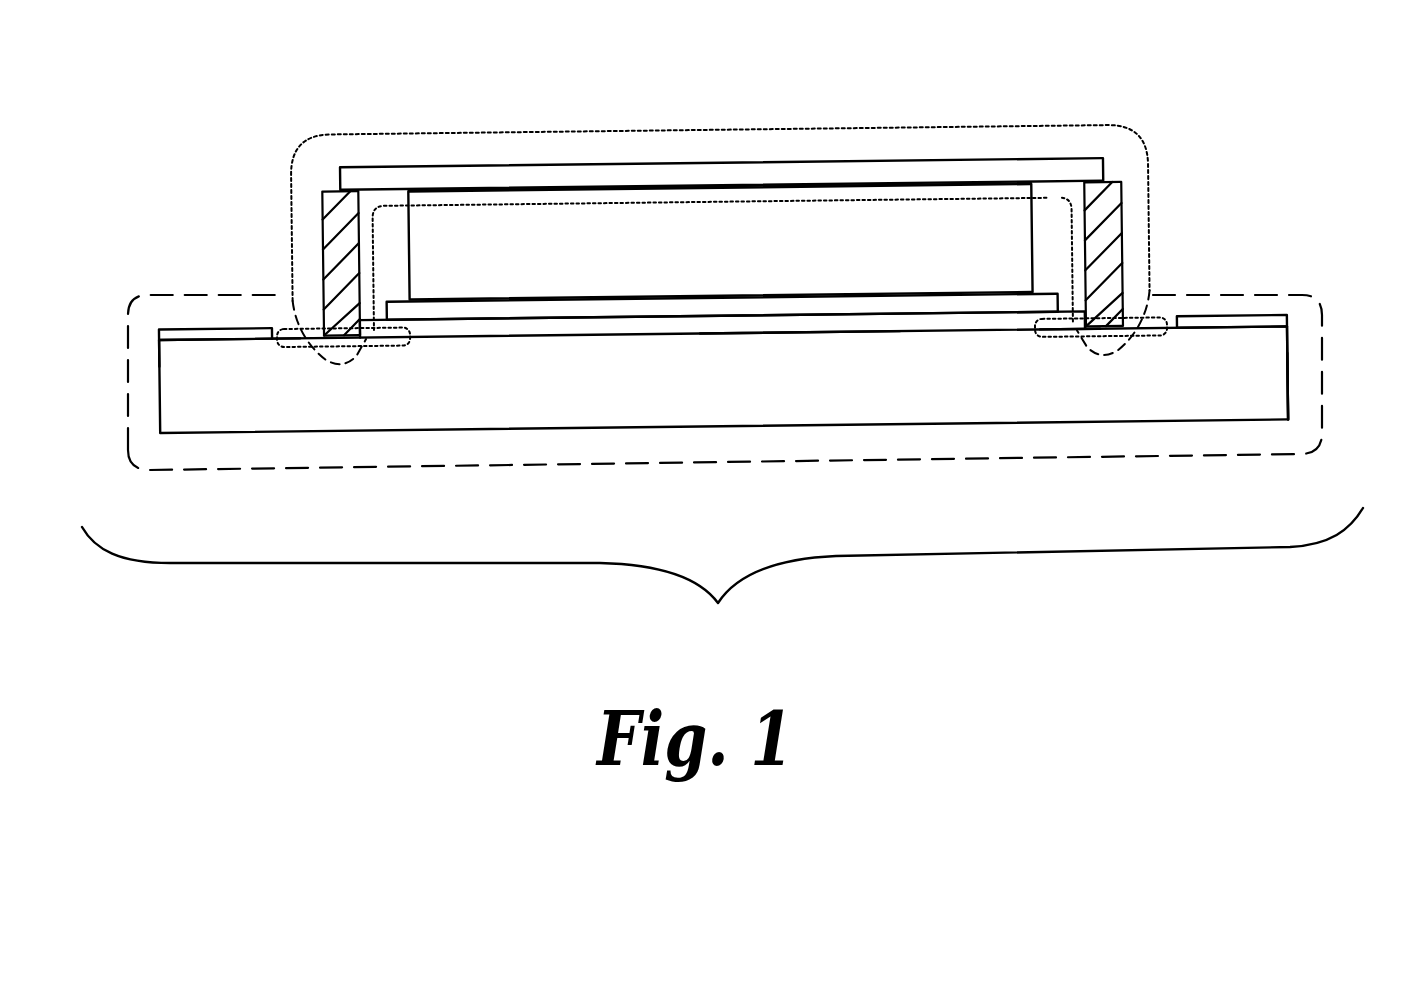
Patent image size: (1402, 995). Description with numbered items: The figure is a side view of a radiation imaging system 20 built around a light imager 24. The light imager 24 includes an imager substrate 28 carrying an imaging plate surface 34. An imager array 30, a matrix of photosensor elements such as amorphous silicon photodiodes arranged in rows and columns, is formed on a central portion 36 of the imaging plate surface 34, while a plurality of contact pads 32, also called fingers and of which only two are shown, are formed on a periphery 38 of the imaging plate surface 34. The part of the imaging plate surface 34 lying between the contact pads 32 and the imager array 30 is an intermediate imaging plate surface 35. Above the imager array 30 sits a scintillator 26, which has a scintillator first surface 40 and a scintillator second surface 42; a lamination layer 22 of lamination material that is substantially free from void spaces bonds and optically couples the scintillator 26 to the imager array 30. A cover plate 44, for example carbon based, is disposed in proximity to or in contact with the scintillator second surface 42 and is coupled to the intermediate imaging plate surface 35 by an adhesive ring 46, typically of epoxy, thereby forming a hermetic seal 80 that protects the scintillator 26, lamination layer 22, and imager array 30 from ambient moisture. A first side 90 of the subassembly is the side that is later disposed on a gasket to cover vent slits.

The radiation imaging system 20 is at (722, 576).
The lamination layer 22 is at (900, 303).
The light imager 24 is at (490, 468).
The scintillator 26 is at (786, 244).
The imager substrate 28 is at (1197, 382).
The imager array 30 is at (797, 335).
The contact pads 32 is at (197, 337).
The imaging plate surface 34 is at (160, 342).
The intermediate imaging plate surface 35 is at (277, 352).
The central portion 36 is at (473, 338).
The periphery 38 is at (1243, 327).
The scintillator first surface 40 is at (483, 300).
The scintillator second surface 42 is at (597, 193).
The cover plate 44 is at (703, 177).
The adhesive ring 46 is at (320, 220).
The hermetic seal 80 is at (1095, 124).
The first side 90 is at (575, 430).